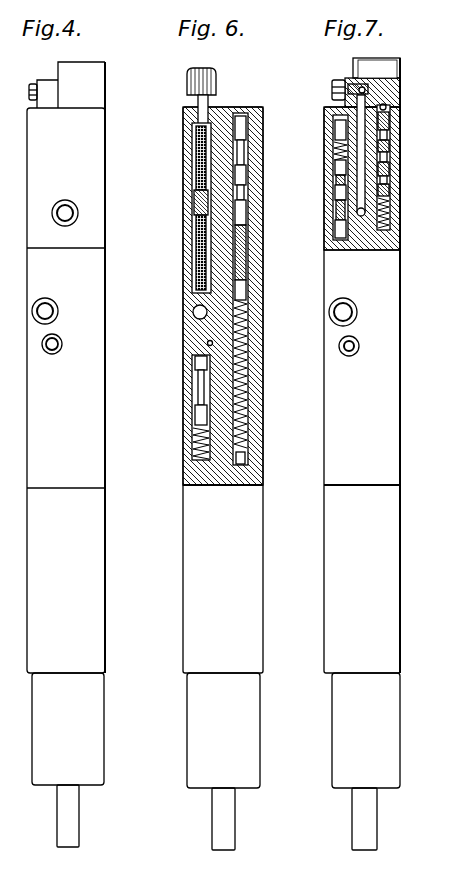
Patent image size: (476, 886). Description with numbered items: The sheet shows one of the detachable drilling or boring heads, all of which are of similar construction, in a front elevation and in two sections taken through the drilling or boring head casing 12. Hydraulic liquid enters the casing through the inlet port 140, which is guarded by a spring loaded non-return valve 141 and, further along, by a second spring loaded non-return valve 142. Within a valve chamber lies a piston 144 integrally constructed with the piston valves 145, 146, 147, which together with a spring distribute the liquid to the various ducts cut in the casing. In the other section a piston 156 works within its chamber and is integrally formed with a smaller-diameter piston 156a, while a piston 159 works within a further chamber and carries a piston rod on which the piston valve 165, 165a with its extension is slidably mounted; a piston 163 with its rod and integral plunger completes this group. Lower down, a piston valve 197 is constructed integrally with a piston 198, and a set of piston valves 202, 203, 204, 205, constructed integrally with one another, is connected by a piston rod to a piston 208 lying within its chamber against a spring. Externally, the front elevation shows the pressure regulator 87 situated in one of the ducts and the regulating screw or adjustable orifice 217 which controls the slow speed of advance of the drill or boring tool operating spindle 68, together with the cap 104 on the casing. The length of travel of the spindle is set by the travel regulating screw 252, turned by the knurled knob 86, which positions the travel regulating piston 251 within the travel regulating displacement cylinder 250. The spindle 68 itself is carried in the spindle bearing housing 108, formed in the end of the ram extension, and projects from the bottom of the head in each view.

In FIG. 4, the drilling or boring head casing 12 is at (66, 367).
In FIG. 6, the drilling or boring head casing 12 is at (223, 390).
In FIG. 7, the drilling or boring head casing 12 is at (362, 365).
In FIG. 4, the drill or boring tool operating spindle 68 is at (67, 831).
In FIG. 6, the drill or boring tool operating spindle 68 is at (222, 824).
In FIG. 7, the drill or boring tool operating spindle 68 is at (358, 821).
In FIG. 6, the knurled knob 86 is at (212, 80).
In FIG. 4, the pressure regulator 87 is at (66, 207).
In FIG. 4, the cap 104 is at (95, 69).
In FIG. 4, the spindle bearing housing 108 is at (68, 729).
In FIG. 6, the spindle bearing housing 108 is at (223, 730).
In FIG. 7, the spindle bearing housing 108 is at (366, 730).
In FIG. 7, the inlet port 140 is at (402, 60).
In FIG. 7, the spring loaded non-return valve 141 is at (359, 89).
In FIG. 7, the spring loaded non-return valve 142 is at (386, 106).
In FIG. 7, the piston 144 is at (390, 121).
In FIG. 7, the piston valve 145 is at (388, 142).
In FIG. 7, the piston valve 146 is at (388, 166).
In FIG. 7, the piston valve 147 is at (390, 192).
In FIG. 6, the piston 156 is at (250, 378).
In FIG. 6, the piston 156a is at (250, 412).
In FIG. 6, the piston 159 is at (250, 118).
In FIG. 6, the piston 163 is at (248, 290).
In FIG. 6, the piston valve 165 is at (247, 180).
In FIG. 6, the piston valve 165a is at (248, 216).
In FIG. 6, the piston valve 197 is at (193, 412).
In FIG. 6, the piston 198 is at (193, 357).
In FIG. 7, the piston valve 202 is at (330, 249).
In FIG. 7, the piston valve 203 is at (342, 228).
In FIG. 7, the piston valve 204 is at (340, 194).
In FIG. 7, the piston valve 205 is at (334, 166).
In FIG. 7, the piston 208 is at (334, 125).
In FIG. 4, the adjustable orifice 217 is at (54, 352).
In FIG. 7, the adjustable orifice 217 is at (338, 346).
In FIG. 6, the travel regulating displacement cylinder 250 is at (194, 259).
In FIG. 6, the travel regulating piston 251 is at (194, 198).
In FIG. 6, the travel regulating screw 252 is at (196, 152).